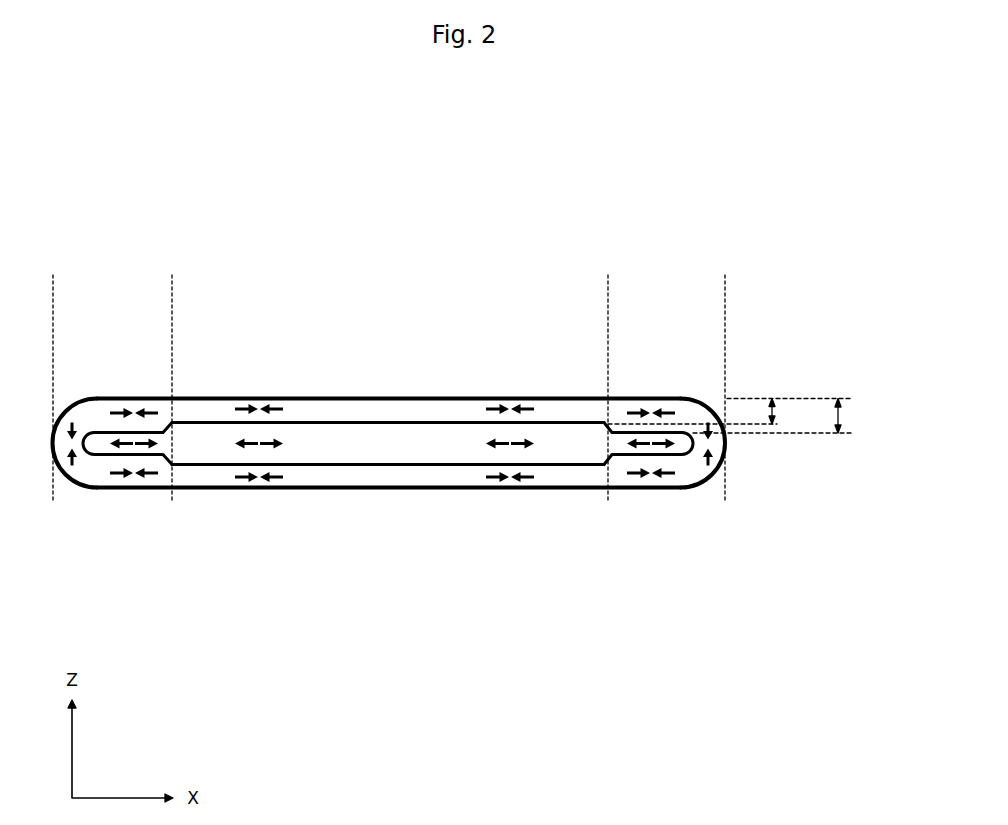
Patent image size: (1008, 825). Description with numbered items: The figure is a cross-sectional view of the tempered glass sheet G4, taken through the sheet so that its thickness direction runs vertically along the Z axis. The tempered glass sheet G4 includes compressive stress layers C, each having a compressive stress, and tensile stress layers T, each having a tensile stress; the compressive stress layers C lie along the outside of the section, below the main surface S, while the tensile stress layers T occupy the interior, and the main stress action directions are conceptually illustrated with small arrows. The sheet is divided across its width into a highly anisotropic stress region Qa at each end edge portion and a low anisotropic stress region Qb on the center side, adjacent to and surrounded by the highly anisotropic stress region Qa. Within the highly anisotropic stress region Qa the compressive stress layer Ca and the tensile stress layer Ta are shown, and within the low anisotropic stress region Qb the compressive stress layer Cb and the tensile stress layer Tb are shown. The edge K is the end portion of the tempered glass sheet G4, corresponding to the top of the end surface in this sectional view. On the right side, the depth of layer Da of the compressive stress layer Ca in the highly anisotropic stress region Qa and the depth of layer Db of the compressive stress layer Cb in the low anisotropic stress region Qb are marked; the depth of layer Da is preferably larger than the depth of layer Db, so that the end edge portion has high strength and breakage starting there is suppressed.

The tempered glass sheet G4 is at (168, 158).
The edge K is at (47, 452).
The main surface S is at (532, 398).
The tensile stress layer T is at (408, 517).
The tensile stress layer Ta is at (97, 447).
The tensile stress layer Tb is at (350, 445).
The compressive stress layer C is at (390, 450).
The compressive stress layer Ca is at (133, 406).
The compressive stress layer Cb is at (407, 415).
The highly anisotropic stress region Qa is at (53, 297).
The low anisotropic stress region Qb is at (608, 297).
The depth of layer Da is at (847, 417).
The depth of layer Db is at (780, 417).